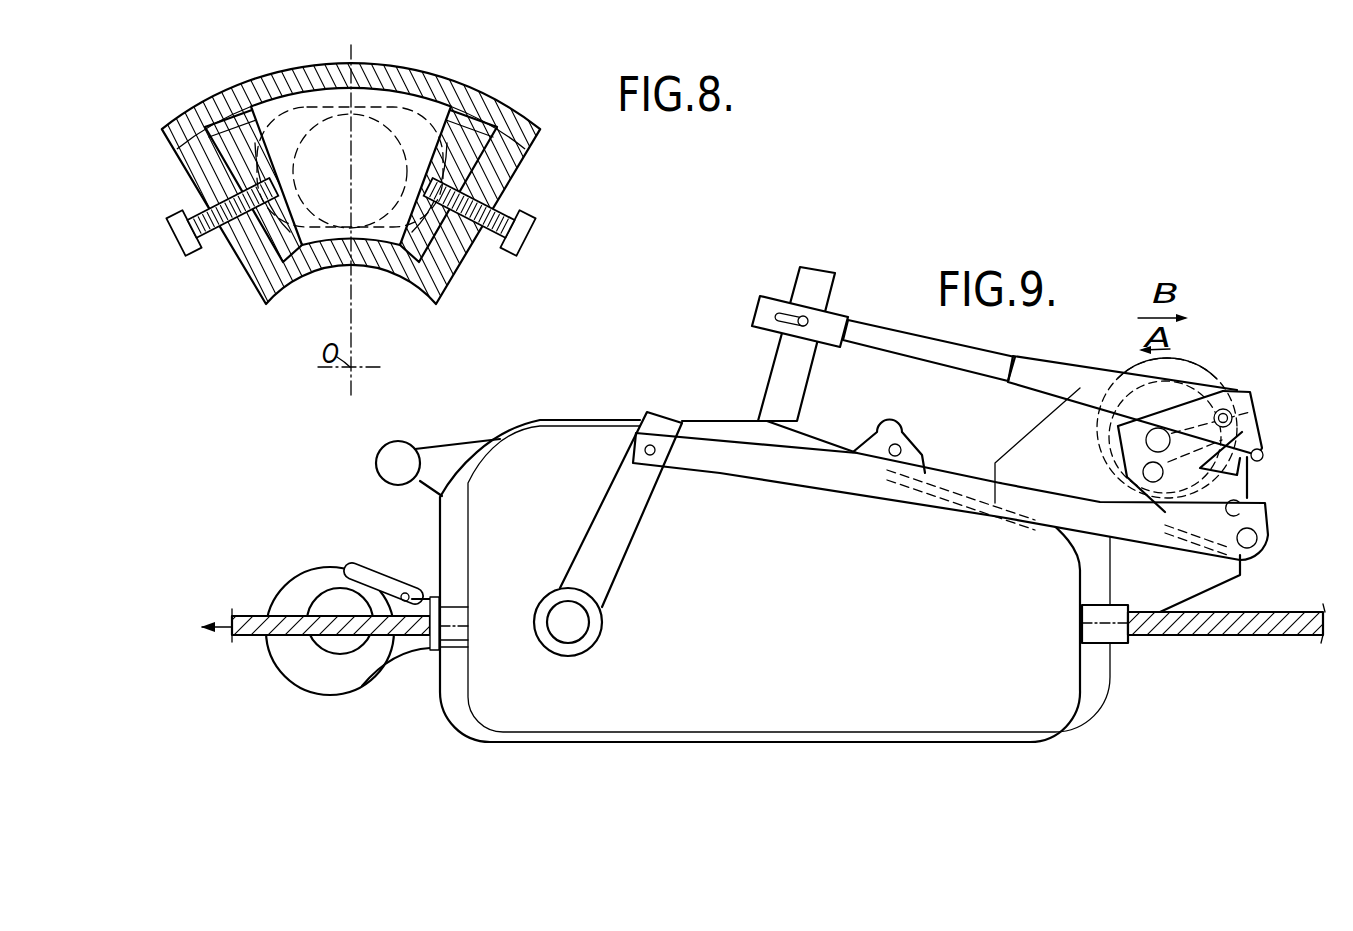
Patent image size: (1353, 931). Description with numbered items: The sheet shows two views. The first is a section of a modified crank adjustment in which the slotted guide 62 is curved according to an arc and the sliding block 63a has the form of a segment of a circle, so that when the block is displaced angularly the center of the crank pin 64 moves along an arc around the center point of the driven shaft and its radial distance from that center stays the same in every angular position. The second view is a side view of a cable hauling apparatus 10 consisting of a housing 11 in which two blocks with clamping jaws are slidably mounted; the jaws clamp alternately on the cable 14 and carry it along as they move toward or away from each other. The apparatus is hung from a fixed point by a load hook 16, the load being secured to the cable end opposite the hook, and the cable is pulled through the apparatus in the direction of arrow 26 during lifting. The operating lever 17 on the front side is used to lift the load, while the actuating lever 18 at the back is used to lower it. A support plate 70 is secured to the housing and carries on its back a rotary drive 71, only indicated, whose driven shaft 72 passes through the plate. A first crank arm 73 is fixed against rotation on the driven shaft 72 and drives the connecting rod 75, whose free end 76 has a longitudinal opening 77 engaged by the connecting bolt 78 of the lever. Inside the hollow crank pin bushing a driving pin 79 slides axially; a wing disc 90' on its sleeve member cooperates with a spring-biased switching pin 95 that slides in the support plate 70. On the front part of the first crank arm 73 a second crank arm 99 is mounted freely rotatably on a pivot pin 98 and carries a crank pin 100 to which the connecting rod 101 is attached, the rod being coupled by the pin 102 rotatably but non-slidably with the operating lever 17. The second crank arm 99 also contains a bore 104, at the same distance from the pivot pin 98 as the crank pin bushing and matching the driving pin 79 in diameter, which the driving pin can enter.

In FIG. 8, the slotted guide 62 is at (508, 125).
In FIG. 8, the sliding block 63a is at (450, 92).
In FIG. 8, the crank pin 64 is at (440, 168).
In FIG. 9, the cable hauling apparatus 10 is at (1020, 747).
In FIG. 9, the housing 11 is at (552, 723).
In FIG. 9, the cable 14 is at (1178, 628).
In FIG. 9, the load hook 16 is at (310, 577).
In FIG. 9, the operating lever 17 is at (608, 533).
In FIG. 9, the actuating lever 18 is at (822, 289).
In FIG. 9, the arrow 26 is at (236, 616).
In FIG. 9, the support plate 70 is at (1018, 455).
In FIG. 9, the rotary drive 71 is at (1128, 380).
In FIG. 9, the driven shaft 72 is at (1157, 420).
In FIG. 9, the first crank arm 73 is at (1235, 390).
In FIG. 9, the connecting rod 75 is at (1030, 370).
In FIG. 9, the free end 76 is at (762, 312).
In FIG. 9, the longitudinal opening 77 is at (770, 327).
In FIG. 9, the connecting bolt 78 is at (808, 321).
In FIG. 9, the driving pin 79 is at (1232, 418).
In FIG. 9, the wing disc 90' is at (1261, 406).
In FIG. 9, the switching pin 95 is at (1259, 452).
In FIG. 9, the pivot pin 98 is at (1153, 482).
In FIG. 9, the second crank arm 99 is at (1222, 497).
In FIG. 9, the crank pin 100 is at (1257, 538).
In FIG. 9, the connecting rod 101 is at (822, 477).
In FIG. 9, the pin 102 is at (652, 455).
In FIG. 9, the bore 104 is at (1243, 506).